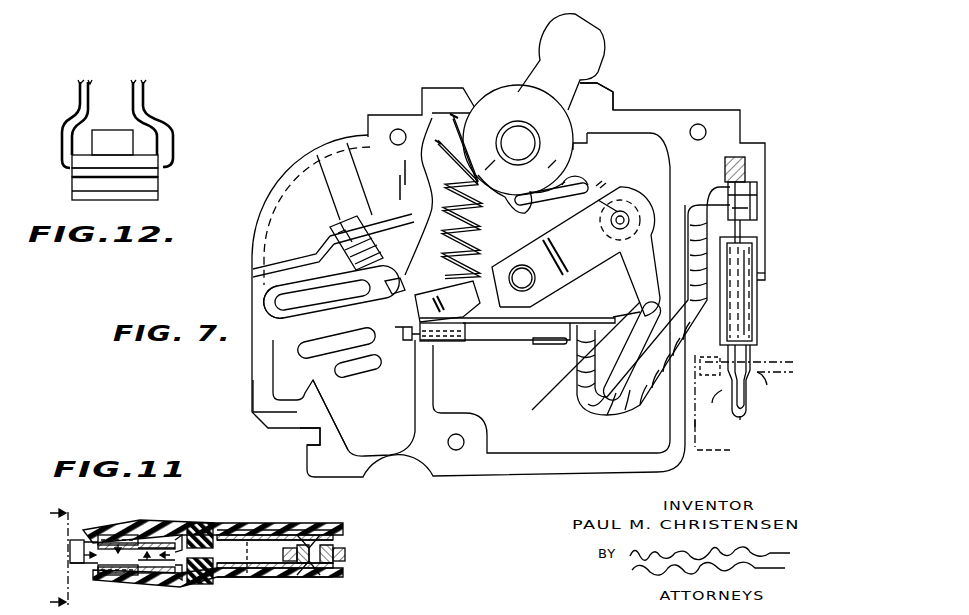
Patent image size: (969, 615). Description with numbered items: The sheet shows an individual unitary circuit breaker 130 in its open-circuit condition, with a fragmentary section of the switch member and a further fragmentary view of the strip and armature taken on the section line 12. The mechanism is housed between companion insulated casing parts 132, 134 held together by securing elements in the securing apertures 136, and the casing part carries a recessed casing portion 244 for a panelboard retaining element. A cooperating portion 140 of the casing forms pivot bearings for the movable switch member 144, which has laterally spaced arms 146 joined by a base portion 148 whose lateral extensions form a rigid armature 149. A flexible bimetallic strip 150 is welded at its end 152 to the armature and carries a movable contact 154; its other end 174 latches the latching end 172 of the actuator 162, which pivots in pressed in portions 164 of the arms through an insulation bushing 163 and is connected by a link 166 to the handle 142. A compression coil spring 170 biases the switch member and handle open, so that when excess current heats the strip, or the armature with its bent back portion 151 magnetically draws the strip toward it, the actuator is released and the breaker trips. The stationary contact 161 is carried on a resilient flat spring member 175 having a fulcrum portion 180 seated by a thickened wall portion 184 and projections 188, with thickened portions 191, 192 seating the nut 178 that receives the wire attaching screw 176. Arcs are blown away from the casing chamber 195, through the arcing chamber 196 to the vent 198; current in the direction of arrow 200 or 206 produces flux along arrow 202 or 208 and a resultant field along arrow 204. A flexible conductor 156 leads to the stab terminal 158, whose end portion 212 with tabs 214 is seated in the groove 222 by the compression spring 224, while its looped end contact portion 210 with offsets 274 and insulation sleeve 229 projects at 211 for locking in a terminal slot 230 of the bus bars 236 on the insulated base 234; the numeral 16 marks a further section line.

In FIG. 7, the circuit breaker 130 is at (653, 106).
In FIG. 7, the casing part 132 is at (608, 83).
In FIG. 11, the casing part 132 is at (210, 530).
In FIG. 11, the casing part 134 is at (258, 585).
In FIG. 7, the securing apertures 136 is at (398, 128).
In FIG. 7, the cooperating portion 140 is at (520, 268).
In FIG. 11, the cooperating portion 140 is at (200, 520).
In FIG. 7, the handle 142 is at (540, 70).
In FIG. 12, the movable switch member 144 is at (116, 107).
In FIG. 7, the movable switch member 144 is at (571, 233).
In FIG. 11, the movable switch member 144 is at (258, 532).
In FIG. 12, the arms 146 is at (78, 97).
In FIG. 7, the arms 146 is at (640, 290).
In FIG. 11, the arms 146 is at (300, 530).
In FIG. 7, the base portion 148 is at (468, 341).
In FIG. 11, the base portion 148 is at (145, 530).
In FIG. 12, the armature 149 is at (152, 183).
In FIG. 7, the armature 149 is at (515, 343).
In FIG. 12, the bimetallic strip 150 is at (154, 158).
In FIG. 7, the bimetallic strip 150 is at (517, 311).
In FIG. 11, the bimetallic strip 150 is at (65, 559).
In FIG. 12, the bent back portion 151 is at (150, 202).
In FIG. 7, the bent back portion 151 is at (550, 345).
In FIG. 12, the end of bimetallic strip 152 is at (143, 152).
In FIG. 7, the end of bimetallic strip 152 is at (446, 345).
In FIG. 12, the movable contact 154 is at (156, 123).
In FIG. 7, the movable contact 154 is at (369, 370).
In FIG. 11, the movable contact 154 is at (85, 545).
In FIG. 7, the flexible conductor 156 is at (594, 414).
In FIG. 7, the stab terminal 158 is at (752, 247).
In FIG. 7, the stationary contact 161 is at (446, 291).
In FIG. 7, the actuator 162 is at (600, 185).
In FIG. 11, the actuator 162 is at (346, 555).
In FIG. 11, the insulation bushing 163 is at (273, 550).
In FIG. 11, the pressed in portions 164 is at (338, 547).
In FIG. 7, the link 166 is at (575, 190).
In FIG. 7, the compression coil spring 170 is at (486, 197).
In FIG. 7, the latching end 172 is at (631, 351).
In FIG. 7, the end of thermal strip 174 is at (628, 310).
In FIG. 7, the flat spring member 175 is at (340, 220).
In FIG. 7, the wire attaching screw 176 is at (378, 215).
In FIG. 7, the nut 178 is at (379, 229).
In FIG. 7, the fulcrum portion 180 is at (268, 297).
In FIG. 7, the thickened wall portion 184 is at (303, 332).
In FIG. 7, the thickened projections 188 is at (293, 256).
In FIG. 7, the thickened portion 191 is at (332, 292).
In FIG. 7, the thickened portion 192 is at (407, 276).
In FIG. 7, the casing chamber 195 is at (530, 421).
In FIG. 7, the arcing chamber 196 is at (388, 419).
In FIG. 7, the vent 198 is at (262, 403).
In FIG. 11, the arrow 200 is at (97, 575).
In FIG. 11, the arrow 202 is at (97, 540).
In FIG. 11, the arrow 204 is at (36, 560).
In FIG. 11, the arrow 206 is at (180, 532).
In FIG. 11, the arrow 208 is at (162, 580).
In FIG. 7, the looped end contact portion 210 is at (750, 418).
In FIG. 7, the casing projection point 211 is at (757, 286).
In FIG. 7, the end portion of stab 212 is at (742, 197).
In FIG. 7, the tabs 214 is at (713, 423).
In FIG. 7, the groove 222 is at (745, 213).
In FIG. 7, the compression spring 224 is at (742, 157).
In FIG. 7, the insulation sleeve 229 is at (755, 312).
In FIG. 7, the terminal slot 230 is at (750, 350).
In FIG. 7, the insulated base 234 is at (735, 453).
In FIG. 7, the bus bars 236 is at (722, 365).
In FIG. 7, the recessed casing portion 244 is at (320, 433).
In FIG. 7, the offsets 274 is at (755, 387).
In FIG. 7, the section line 16- 16 is at (326, 212).
In FIG. 11, the section line 12- 12 is at (47, 549).